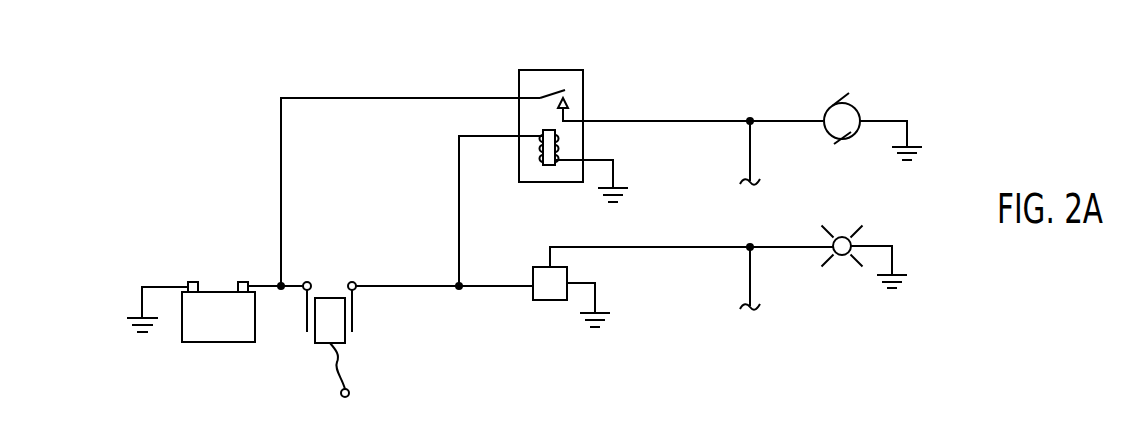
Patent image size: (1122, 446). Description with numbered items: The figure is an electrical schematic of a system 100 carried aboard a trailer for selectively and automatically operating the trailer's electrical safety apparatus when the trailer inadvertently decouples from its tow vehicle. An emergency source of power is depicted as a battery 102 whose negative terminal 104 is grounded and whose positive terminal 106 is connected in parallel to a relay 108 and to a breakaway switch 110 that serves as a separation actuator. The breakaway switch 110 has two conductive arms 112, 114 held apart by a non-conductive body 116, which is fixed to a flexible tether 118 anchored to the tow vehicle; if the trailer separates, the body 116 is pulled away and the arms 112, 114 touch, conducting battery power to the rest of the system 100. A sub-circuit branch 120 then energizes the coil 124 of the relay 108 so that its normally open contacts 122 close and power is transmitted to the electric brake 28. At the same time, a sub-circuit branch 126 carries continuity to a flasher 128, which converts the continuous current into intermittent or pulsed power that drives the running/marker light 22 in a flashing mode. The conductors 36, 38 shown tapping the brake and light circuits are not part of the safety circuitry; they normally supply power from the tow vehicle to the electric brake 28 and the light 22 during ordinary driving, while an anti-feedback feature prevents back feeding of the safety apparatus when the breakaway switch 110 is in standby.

The system 100 is at (942, 74).
The battery 102 is at (212, 343).
The negative terminal 104 is at (186, 270).
The positive terminal 106 is at (235, 267).
The relay 108 is at (530, 56).
The breakaway switch 110 is at (378, 368).
The conductive arm 112 is at (306, 305).
The conductive arm 114 is at (354, 308).
The non-conductive body 116 is at (328, 296).
The flexible tether 118 is at (340, 372).
The sub-circuit branch 120 is at (498, 135).
The normally open contacts 122 is at (598, 76).
The coil 124 is at (598, 143).
The sub-circuit branch 126 is at (488, 282).
The flasher 128 is at (545, 312).
The electric brake 28 is at (826, 104).
The conductor 36 is at (752, 143).
The conductor 38 is at (752, 278).
The running/marker light 22 is at (830, 256).